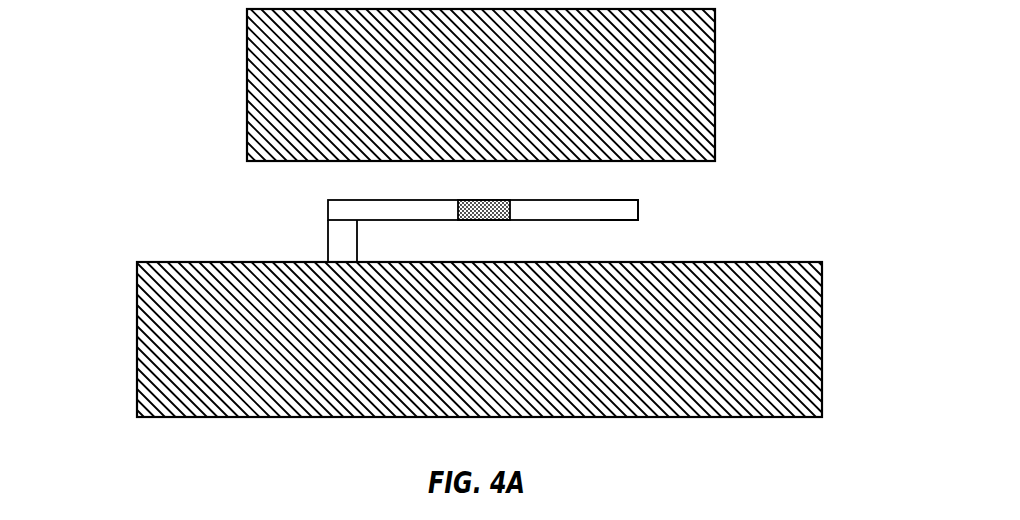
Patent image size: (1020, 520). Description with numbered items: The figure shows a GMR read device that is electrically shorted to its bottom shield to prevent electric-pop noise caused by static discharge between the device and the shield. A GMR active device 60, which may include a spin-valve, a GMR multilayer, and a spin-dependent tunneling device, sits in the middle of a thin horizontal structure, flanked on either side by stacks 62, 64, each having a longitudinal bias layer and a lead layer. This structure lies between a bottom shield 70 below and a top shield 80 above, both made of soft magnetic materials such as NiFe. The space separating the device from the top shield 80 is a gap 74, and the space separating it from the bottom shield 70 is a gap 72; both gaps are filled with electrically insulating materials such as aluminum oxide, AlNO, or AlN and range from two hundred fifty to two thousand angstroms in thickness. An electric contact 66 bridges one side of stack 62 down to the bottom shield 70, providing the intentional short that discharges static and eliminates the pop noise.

The top shield 80 is at (237, 35).
The bottom shield 70 is at (125, 300).
The lead layer and longitudinal bias layer stack 62 is at (328, 212).
The lead layer and longitudinal bias layer stack 64 is at (641, 206).
The electric contact 66 is at (328, 250).
The GMR active device 60 is at (493, 199).
The gap 74 is at (308, 183).
The gap 72 is at (592, 250).